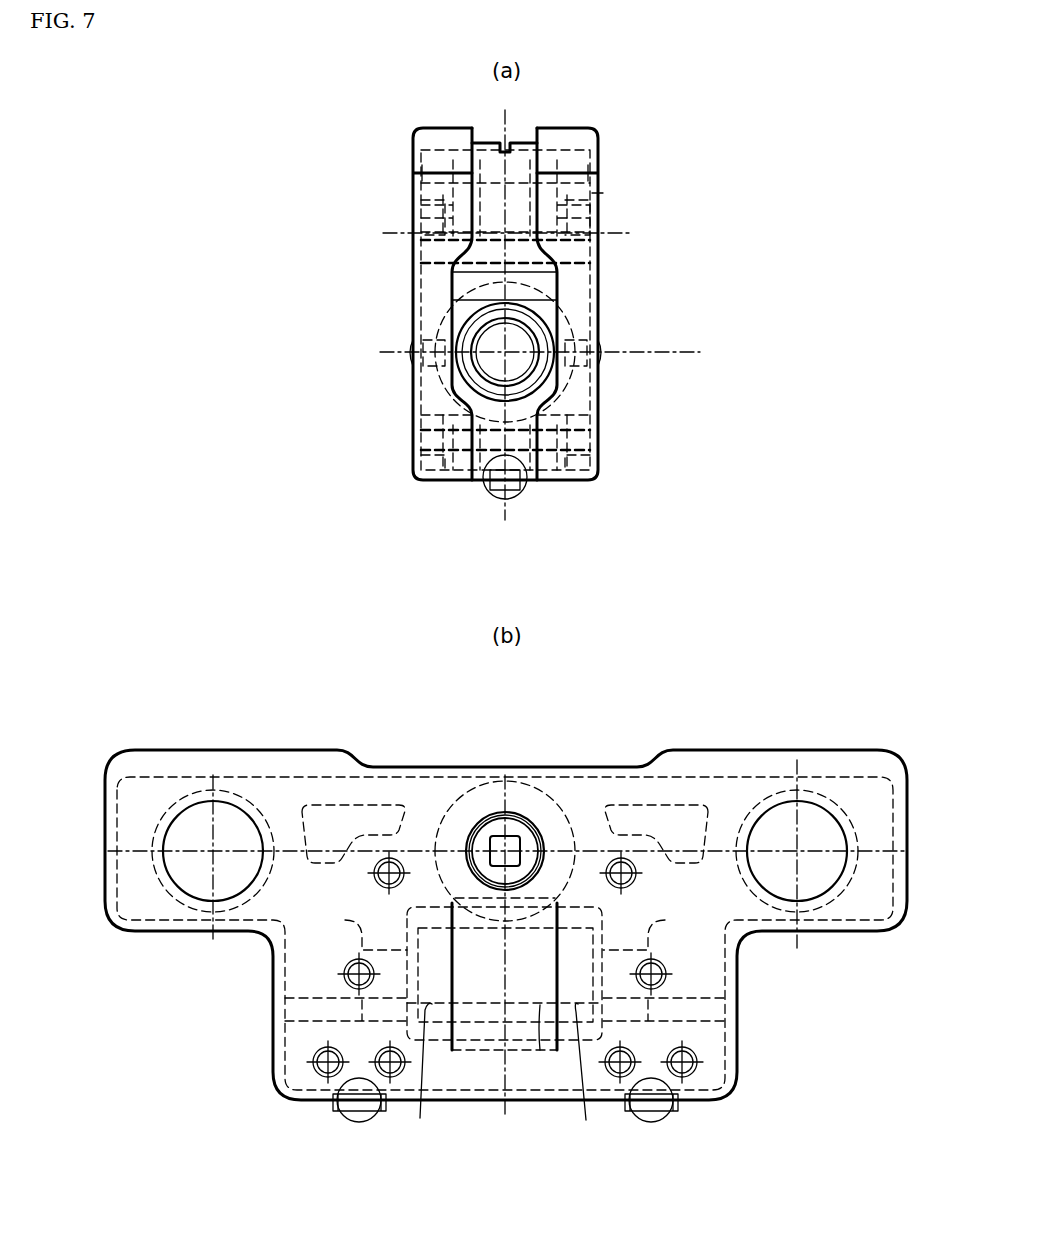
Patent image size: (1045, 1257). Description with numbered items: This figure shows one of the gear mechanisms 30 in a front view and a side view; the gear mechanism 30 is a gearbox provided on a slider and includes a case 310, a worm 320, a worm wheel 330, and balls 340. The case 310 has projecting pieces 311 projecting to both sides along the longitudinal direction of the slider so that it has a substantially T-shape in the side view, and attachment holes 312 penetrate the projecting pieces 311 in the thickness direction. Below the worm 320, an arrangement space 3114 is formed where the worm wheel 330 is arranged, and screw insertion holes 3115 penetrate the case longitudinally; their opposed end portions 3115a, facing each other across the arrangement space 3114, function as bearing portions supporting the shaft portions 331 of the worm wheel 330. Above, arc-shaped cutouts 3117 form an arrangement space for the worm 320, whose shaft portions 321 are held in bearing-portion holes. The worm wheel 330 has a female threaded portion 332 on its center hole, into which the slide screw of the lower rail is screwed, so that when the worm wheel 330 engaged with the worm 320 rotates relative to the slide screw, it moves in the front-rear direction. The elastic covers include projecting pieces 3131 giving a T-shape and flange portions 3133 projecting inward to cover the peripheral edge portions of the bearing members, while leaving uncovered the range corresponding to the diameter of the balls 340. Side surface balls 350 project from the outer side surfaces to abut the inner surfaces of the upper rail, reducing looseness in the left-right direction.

The gear mechanism 30 is at (402, 130).
The case 310 is at (302, 750).
The projecting piece 311 is at (178, 750).
The attachment hole 312 is at (180, 822).
The arrangement space 3114 is at (541, 1004).
The screw insertion hole 3115 is at (370, 993).
The opposed end portion 3115a is at (507, 1074).
The arc-shaped cutout 3117 is at (458, 820).
The projecting piece 3131 is at (580, 128).
The flange portion 3133 is at (530, 128).
The worm 320 is at (432, 183).
The shaft portion 321 is at (507, 826).
The worm wheel 330 is at (445, 330).
The shaft portion 331 is at (452, 378).
The female threaded portion 332 is at (519, 1004).
The ball 340 is at (519, 492).
The side surface ball 350 is at (422, 350).